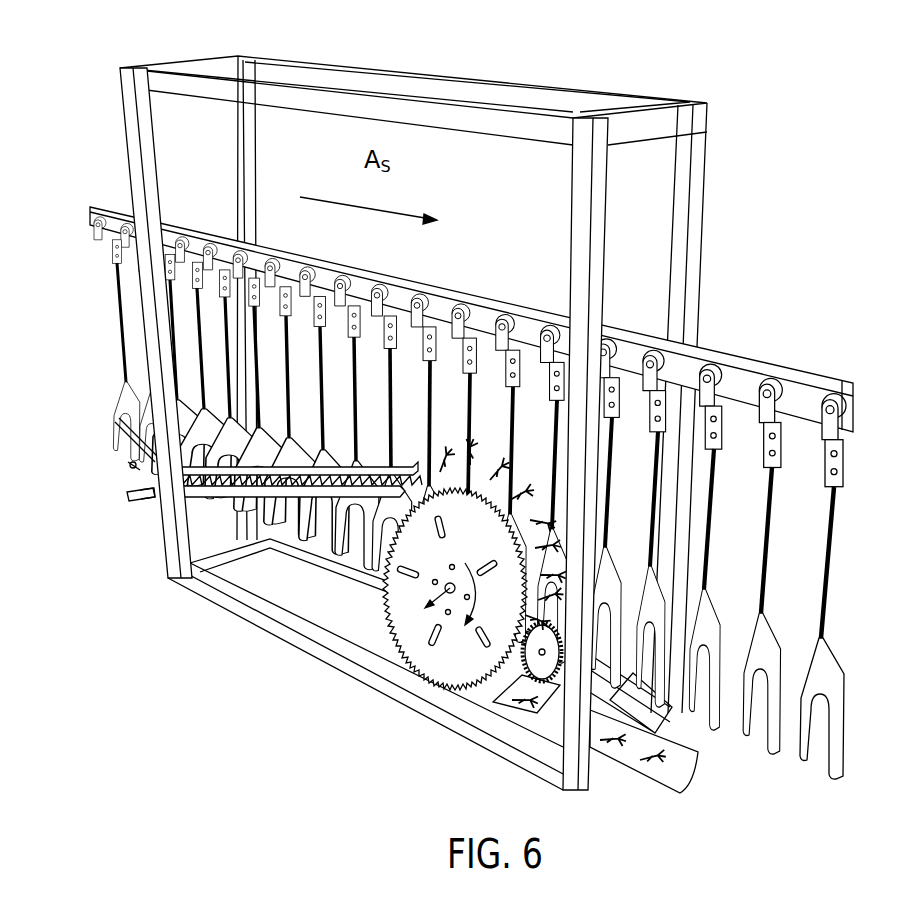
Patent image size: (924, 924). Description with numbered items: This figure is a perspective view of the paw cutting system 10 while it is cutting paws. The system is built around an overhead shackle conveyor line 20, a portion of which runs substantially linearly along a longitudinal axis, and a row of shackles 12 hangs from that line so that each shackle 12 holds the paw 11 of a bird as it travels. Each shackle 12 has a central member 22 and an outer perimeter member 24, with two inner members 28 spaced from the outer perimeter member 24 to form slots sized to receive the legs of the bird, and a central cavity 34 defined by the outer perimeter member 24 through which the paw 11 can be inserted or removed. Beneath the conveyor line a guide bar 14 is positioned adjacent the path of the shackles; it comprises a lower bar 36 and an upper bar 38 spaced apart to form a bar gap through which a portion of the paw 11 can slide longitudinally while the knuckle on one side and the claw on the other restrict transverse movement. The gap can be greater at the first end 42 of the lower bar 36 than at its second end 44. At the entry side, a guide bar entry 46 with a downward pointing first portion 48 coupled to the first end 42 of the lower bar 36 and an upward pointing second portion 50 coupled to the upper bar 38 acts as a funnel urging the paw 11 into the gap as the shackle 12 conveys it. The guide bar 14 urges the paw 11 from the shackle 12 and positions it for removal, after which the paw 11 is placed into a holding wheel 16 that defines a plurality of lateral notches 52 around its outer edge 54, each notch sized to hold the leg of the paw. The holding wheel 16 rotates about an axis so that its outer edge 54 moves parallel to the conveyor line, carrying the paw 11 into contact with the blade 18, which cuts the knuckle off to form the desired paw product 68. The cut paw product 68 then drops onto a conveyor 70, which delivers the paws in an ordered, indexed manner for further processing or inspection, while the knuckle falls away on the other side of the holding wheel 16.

The paw cutting system 10 is at (494, 397).
The paw 11 is at (130, 465).
The shackle 12 is at (847, 586).
The guide bar 14 is at (272, 515).
The holding wheel 16 is at (455, 635).
The blade 18 is at (544, 670).
The shackle conveyor line 20 is at (806, 392).
The central member 22 is at (826, 520).
The outer perimeter member 24 is at (847, 700).
The inner members 28 is at (830, 480).
The central cavity 34 is at (830, 680).
The lower bar 36 is at (290, 492).
The upper bar 38 is at (345, 465).
The first end 42 is at (186, 492).
The second end 44 is at (400, 476).
The guide bar entry 46 is at (128, 498).
The downward pointing first portion 48 is at (147, 498).
The upward pointing second portion 50 is at (125, 437).
The lateral notches 52 is at (437, 684).
The outer edge 54 is at (548, 562).
The paw product 68 is at (668, 757).
The conveyor 70 is at (652, 790).